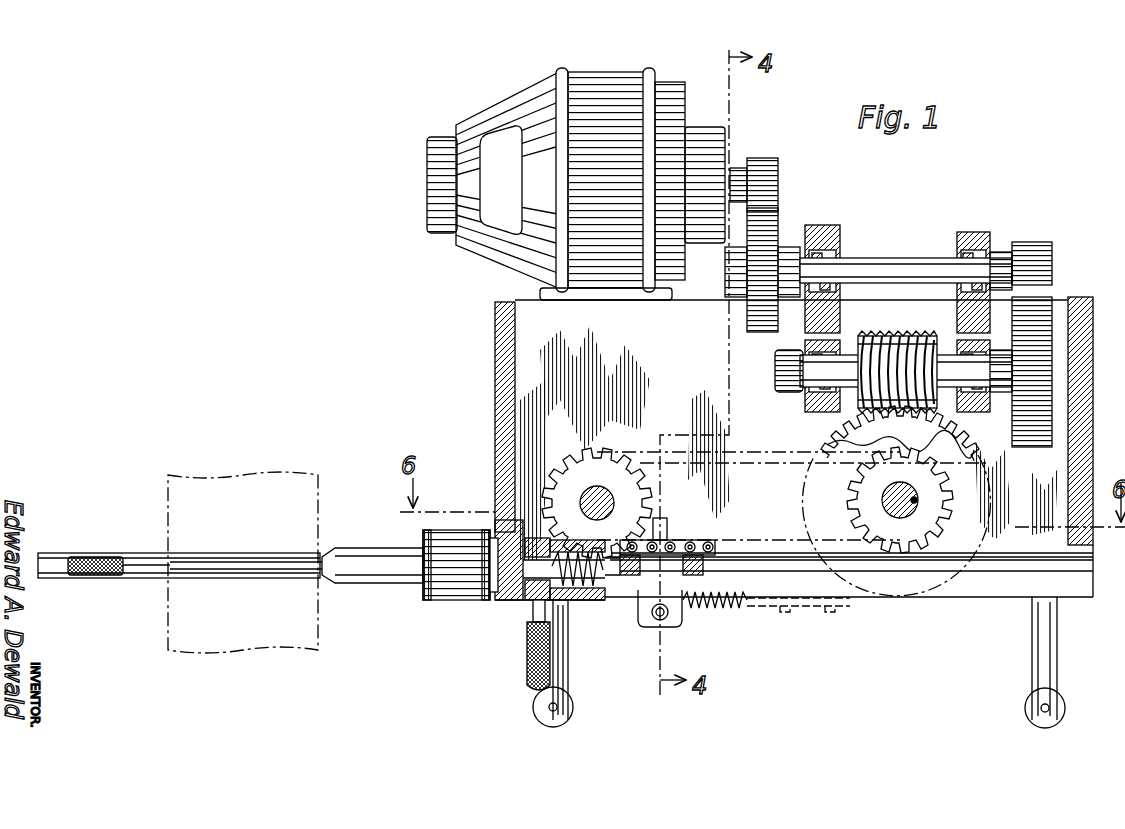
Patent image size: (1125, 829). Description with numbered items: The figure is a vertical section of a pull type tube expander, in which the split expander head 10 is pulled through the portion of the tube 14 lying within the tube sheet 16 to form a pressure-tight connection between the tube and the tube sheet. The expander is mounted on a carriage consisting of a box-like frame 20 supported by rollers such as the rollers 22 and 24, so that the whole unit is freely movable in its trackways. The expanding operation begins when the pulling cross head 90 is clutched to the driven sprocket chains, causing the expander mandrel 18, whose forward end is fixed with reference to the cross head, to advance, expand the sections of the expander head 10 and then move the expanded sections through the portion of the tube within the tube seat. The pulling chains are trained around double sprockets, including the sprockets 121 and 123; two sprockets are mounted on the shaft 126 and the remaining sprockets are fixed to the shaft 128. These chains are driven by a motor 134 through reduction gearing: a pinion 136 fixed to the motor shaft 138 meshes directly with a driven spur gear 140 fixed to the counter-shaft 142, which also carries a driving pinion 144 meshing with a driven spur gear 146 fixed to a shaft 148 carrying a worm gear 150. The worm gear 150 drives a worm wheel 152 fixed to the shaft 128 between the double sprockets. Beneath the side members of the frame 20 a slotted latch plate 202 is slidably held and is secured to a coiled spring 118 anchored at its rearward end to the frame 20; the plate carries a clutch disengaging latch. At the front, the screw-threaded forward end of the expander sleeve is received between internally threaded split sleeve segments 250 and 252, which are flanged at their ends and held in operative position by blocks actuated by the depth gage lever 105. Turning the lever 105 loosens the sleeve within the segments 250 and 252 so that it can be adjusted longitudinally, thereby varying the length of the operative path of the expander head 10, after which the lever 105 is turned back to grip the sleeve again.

The split expander head 10 is at (170, 557).
The tube 14 is at (148, 580).
The tube sheet 16 is at (248, 470).
The expander mandrel 18 is at (138, 562).
The box-like frame 20 is at (493, 348).
The roller 22 is at (535, 701).
The roller 24 is at (1026, 704).
The pulling cross head 90 is at (712, 548).
The depth gage lever 105 is at (527, 641).
The coiled spring 118 is at (706, 608).
The double sprocket 121 is at (920, 540).
The double sprocket 123 is at (613, 456).
The shaft 126 is at (590, 488).
The shaft 128 is at (897, 512).
The motor 134 is at (602, 74).
The pinion 136 is at (769, 158).
The motor shaft 138 is at (781, 192).
The driven spur gear 140 is at (782, 226).
The counter-shaft 142 is at (880, 258).
The driving pinion 144 is at (1048, 242).
The driven spur gear 146 is at (1044, 330).
The shaft 148 is at (777, 375).
The worm gear 150 is at (881, 338).
The worm wheel 152 is at (833, 423).
The latch plate 202 is at (772, 607).
The split sleeve segment 250 is at (520, 550).
The split sleeve segment 252 is at (523, 584).